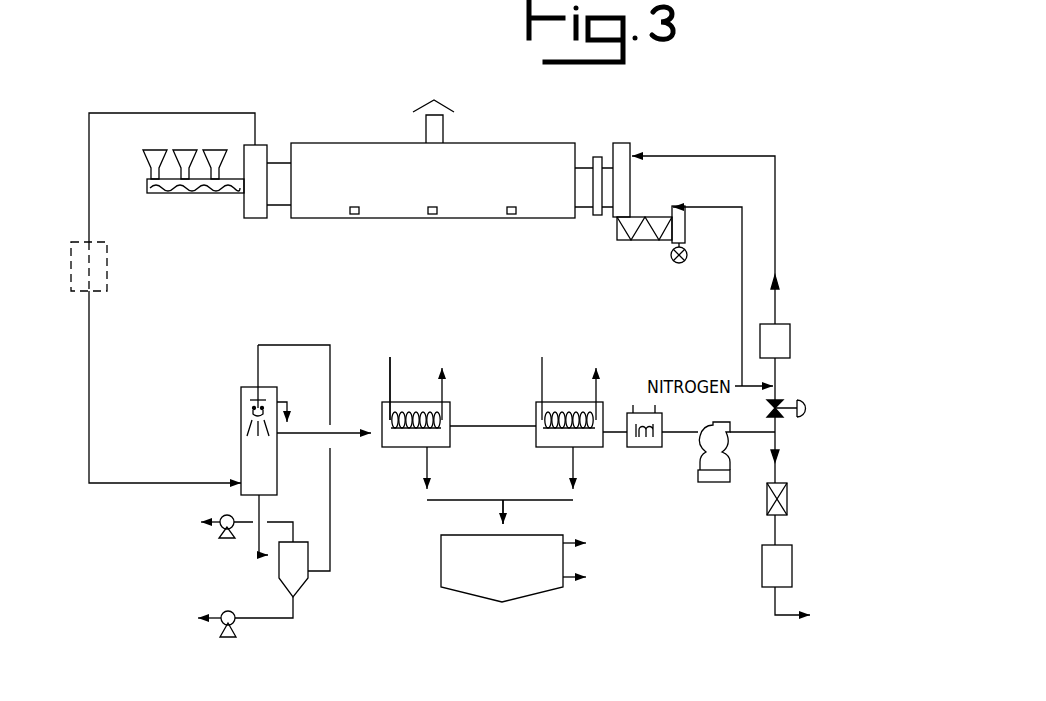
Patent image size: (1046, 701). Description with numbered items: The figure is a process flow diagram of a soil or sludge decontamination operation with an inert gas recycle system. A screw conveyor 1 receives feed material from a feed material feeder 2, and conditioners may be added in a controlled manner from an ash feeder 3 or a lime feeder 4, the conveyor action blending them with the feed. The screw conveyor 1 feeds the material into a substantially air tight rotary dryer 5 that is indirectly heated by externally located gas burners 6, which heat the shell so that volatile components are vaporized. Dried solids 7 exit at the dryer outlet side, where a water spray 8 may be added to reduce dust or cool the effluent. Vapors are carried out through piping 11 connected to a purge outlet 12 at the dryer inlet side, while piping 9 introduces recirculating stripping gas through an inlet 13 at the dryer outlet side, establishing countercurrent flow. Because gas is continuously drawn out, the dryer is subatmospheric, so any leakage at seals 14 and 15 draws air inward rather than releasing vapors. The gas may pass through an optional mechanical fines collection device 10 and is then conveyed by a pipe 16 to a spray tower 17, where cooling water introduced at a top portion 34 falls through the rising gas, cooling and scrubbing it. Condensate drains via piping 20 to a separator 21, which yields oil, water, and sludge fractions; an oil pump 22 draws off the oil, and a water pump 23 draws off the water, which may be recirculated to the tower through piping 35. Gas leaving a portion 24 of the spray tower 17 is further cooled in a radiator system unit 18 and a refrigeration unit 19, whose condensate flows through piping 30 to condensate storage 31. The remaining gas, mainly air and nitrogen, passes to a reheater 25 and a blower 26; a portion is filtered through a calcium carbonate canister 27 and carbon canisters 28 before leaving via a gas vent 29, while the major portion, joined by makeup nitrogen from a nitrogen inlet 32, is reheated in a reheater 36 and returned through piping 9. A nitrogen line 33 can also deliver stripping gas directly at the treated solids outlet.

The screw conveyor 1 is at (203, 195).
The feed material feeder 2 is at (154, 152).
The ash feeder 3 is at (184, 152).
The lime feeder 4 is at (214, 152).
The rotary dryer 5 is at (550, 150).
The gas burners 6 is at (355, 214).
The dried solids 7 is at (670, 258).
The water spray 8 is at (653, 215).
The piping 9 is at (703, 155).
The intermediate mechanical fines collection device 10 is at (70, 292).
The piping 11 is at (85, 178).
The purge outlet 12 is at (268, 130).
The inlet 13 is at (622, 143).
The seal 14 is at (270, 153).
The seal 15 is at (603, 147).
The pipe 16 is at (86, 416).
The spray tower 17 is at (230, 402).
The atmospherically cooled radiator system unit 18 is at (413, 385).
The refrigeration unit 19 is at (565, 390).
The piping 20 is at (253, 540).
The separator 21 is at (273, 578).
The oil pump 22 is at (208, 538).
The water pump 23 is at (227, 642).
The portion of spray tower 24 is at (612, 490).
The reheater 25 is at (651, 452).
The blower 26 is at (718, 488).
The calcium carbonate canister 27 is at (793, 497).
The carbon canister 28 is at (802, 567).
The gas vent 29 is at (833, 606).
The piping 30 is at (487, 497).
The condensate storage 31 is at (497, 605).
The nitrogen inlet 32 is at (787, 382).
The nitrogen line 33 is at (710, 210).
The top portion 34 is at (267, 393).
The piping 35 is at (332, 477).
The reheater 36 is at (793, 332).